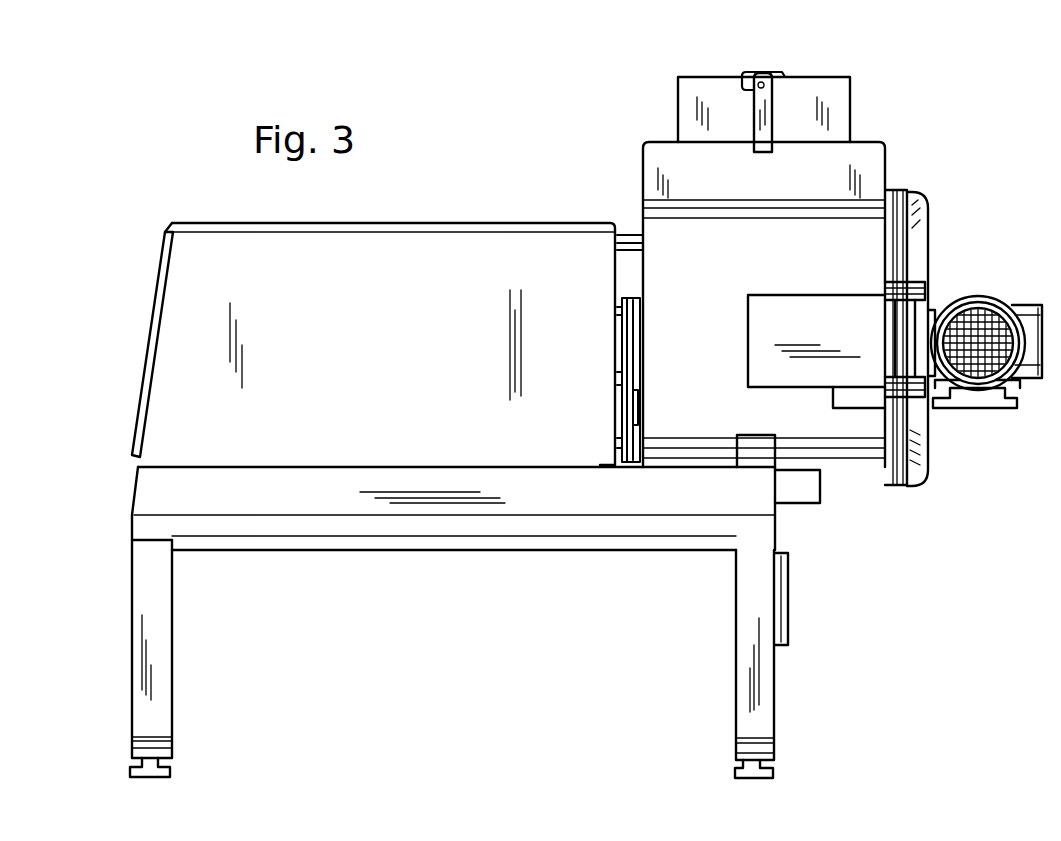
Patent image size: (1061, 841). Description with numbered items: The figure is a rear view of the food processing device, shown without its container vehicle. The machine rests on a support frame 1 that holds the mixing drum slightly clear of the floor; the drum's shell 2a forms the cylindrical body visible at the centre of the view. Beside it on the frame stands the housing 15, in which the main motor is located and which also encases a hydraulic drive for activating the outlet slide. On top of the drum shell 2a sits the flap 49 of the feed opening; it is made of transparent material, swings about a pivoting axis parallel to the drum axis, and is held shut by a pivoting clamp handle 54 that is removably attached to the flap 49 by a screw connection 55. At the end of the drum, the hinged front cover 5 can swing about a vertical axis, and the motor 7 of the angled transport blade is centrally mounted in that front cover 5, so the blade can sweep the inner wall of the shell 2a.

The support frame 1 is at (155, 493).
The housing 15 is at (358, 364).
The drum shell 2a is at (773, 264).
The flap 49 is at (690, 110).
The clamp handle 54 is at (768, 108).
The screw connection 55 is at (765, 84).
The front cover 5 is at (912, 224).
The motor 7 is at (973, 404).